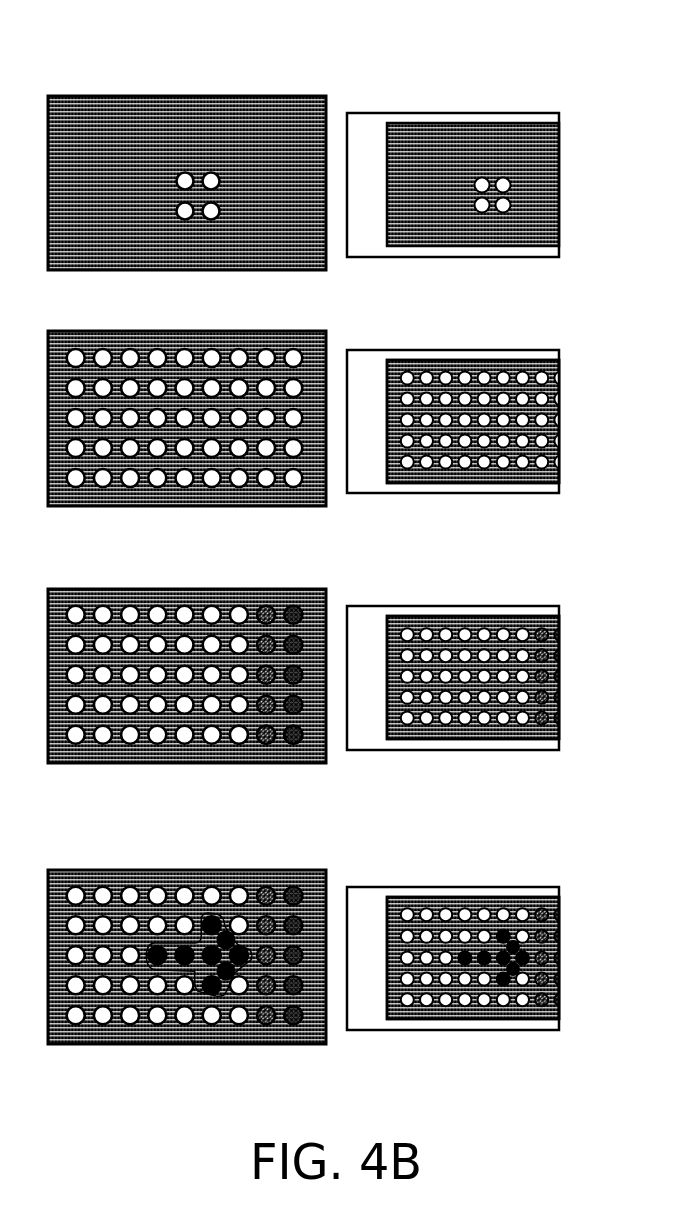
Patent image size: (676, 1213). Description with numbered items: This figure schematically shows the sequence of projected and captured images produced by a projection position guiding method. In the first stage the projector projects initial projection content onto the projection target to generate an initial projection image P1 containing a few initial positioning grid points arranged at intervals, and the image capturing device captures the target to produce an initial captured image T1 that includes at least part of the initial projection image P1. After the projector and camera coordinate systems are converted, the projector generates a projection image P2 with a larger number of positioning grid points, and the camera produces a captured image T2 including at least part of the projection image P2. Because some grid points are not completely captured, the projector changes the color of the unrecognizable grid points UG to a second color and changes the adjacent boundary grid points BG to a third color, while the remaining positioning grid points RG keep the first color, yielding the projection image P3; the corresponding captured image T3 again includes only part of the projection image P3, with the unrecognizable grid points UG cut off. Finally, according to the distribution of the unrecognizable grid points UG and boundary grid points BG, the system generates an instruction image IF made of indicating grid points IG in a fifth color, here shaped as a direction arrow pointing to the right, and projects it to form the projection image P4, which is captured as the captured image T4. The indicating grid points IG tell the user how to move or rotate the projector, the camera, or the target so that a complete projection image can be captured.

The initial projection image P1 is at (178, 88).
The projection image P2 is at (178, 323).
The projection image P3 is at (178, 581).
The projection image P4 is at (178, 862).
The initial captured image T1 is at (425, 105).
The captured image T2 is at (425, 342).
The captured image T3 is at (445, 598).
The captured image T4 is at (445, 879).
The positioning grid points RG is at (235, 747).
The boundary grid points BG is at (263, 747).
The unrecognizable grid points UG is at (290, 747).
The instruction image IF is at (190, 986).
The indicating grid points IG is at (210, 983).